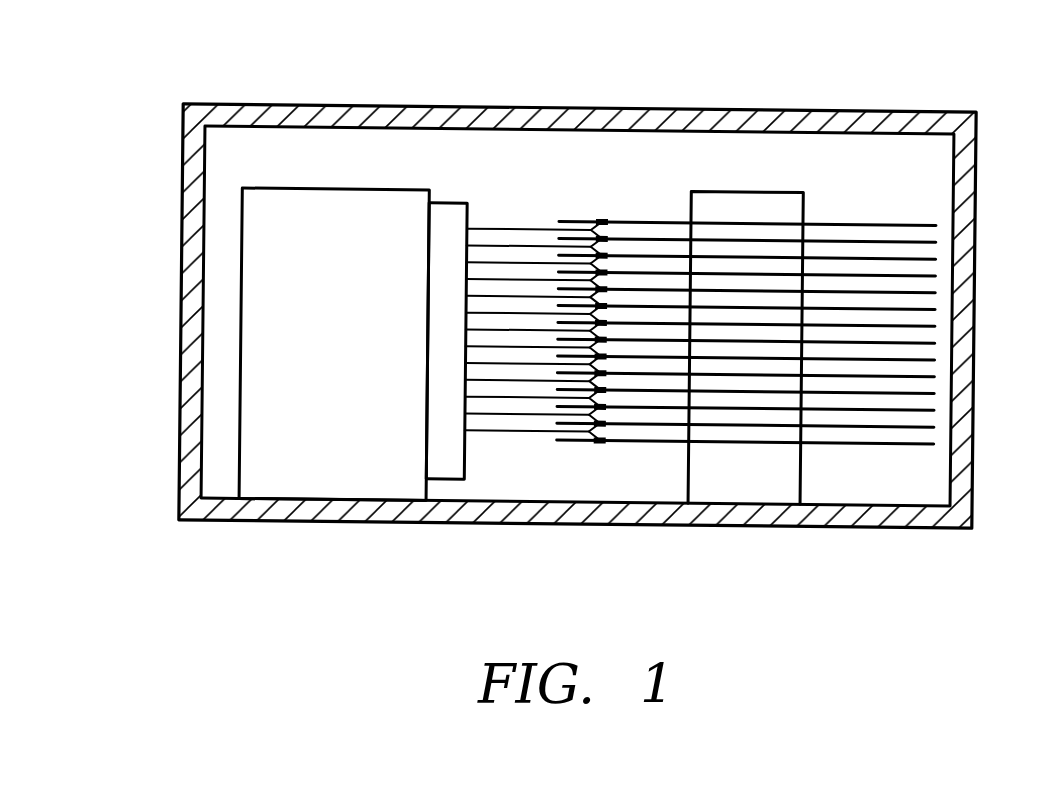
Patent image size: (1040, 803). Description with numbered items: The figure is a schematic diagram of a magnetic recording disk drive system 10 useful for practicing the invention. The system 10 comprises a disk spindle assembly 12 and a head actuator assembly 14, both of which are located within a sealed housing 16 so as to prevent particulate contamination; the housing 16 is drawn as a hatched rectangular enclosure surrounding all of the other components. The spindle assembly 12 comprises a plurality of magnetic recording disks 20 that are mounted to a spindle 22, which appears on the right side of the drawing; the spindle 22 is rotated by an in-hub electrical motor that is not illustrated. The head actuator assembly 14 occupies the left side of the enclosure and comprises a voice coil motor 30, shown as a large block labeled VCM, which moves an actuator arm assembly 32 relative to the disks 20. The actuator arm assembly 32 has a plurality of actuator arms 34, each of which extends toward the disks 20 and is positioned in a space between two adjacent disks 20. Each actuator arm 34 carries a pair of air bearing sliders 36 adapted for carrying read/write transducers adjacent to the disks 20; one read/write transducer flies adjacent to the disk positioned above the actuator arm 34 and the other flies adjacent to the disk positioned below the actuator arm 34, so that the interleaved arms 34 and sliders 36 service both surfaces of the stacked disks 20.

The disk drive system 10 is at (552, 327).
The disk spindle assembly 12 is at (738, 168).
The head actuator assembly 14 is at (421, 283).
The sealed housing 16 is at (551, 108).
The magnetic recording disks 20 is at (644, 219).
The spindle 22 is at (789, 190).
The voice coil motor 30 is at (348, 260).
The actuator arm assembly 32 is at (446, 204).
The actuator arms 34 is at (508, 223).
The air bearing sliders 36 is at (591, 221).